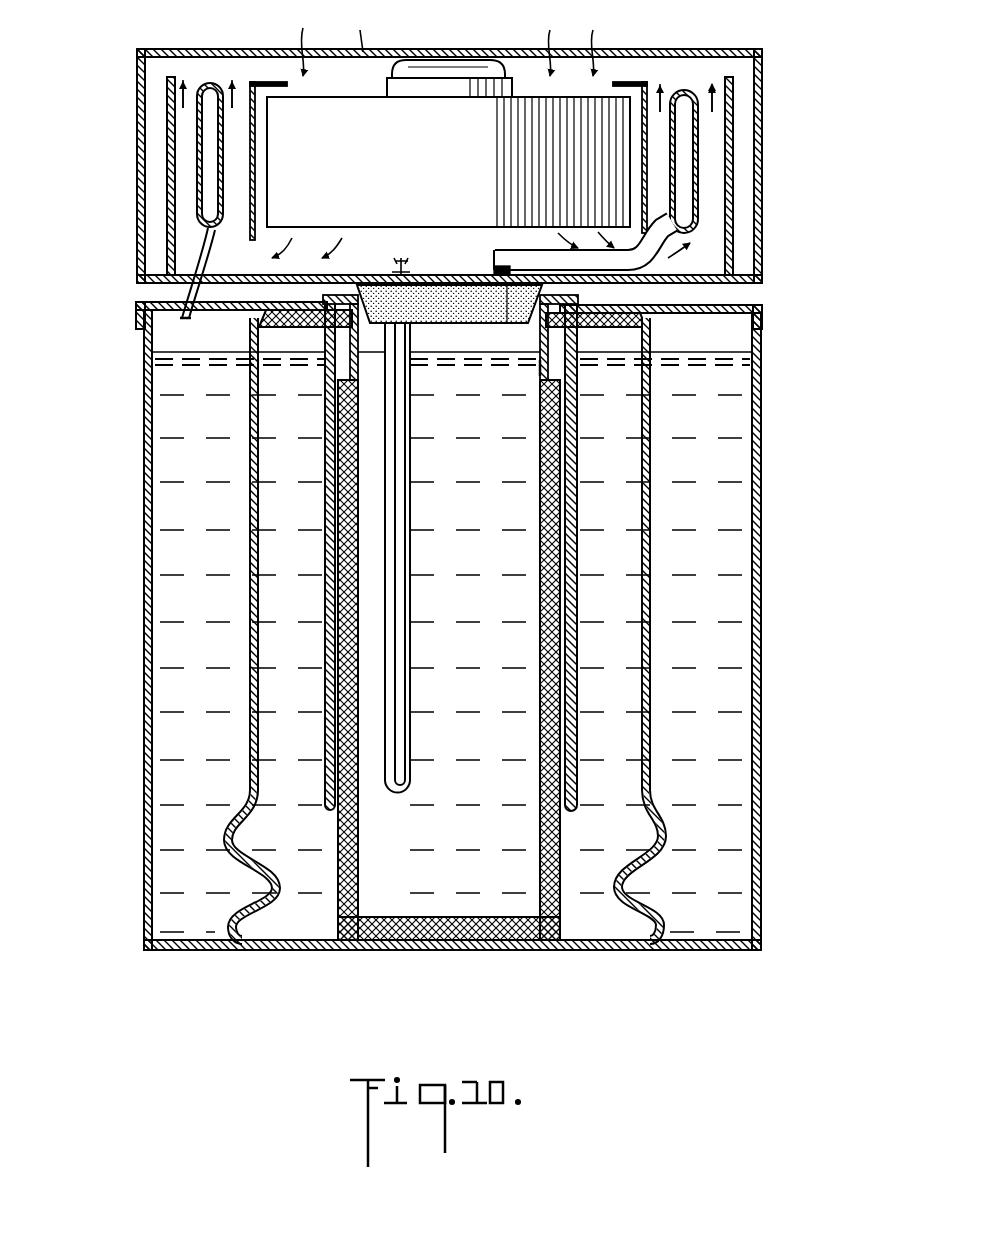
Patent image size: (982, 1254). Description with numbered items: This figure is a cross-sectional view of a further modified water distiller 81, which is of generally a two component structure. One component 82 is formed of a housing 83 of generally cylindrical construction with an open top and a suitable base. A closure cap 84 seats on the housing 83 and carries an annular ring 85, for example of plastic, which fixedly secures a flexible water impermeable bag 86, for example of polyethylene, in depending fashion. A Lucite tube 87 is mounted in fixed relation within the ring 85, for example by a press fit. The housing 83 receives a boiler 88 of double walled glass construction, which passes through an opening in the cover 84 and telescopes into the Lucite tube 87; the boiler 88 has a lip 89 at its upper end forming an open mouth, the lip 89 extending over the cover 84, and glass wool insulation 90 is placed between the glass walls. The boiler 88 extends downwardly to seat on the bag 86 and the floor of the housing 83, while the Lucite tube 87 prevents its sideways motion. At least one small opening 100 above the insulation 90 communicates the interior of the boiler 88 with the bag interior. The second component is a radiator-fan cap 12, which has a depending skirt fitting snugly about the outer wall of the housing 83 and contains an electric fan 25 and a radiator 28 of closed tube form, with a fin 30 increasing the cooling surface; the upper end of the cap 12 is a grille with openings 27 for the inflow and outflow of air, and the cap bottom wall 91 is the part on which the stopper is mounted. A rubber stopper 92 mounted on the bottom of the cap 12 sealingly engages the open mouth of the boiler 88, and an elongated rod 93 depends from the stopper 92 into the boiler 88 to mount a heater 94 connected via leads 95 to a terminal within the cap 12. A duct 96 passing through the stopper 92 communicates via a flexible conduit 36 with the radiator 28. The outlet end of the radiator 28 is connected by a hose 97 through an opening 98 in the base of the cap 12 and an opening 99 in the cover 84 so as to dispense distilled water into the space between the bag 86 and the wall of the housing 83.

The radiator-fan cap 12 is at (126, 146).
The electric fan 25 is at (334, 97).
The openings or perforations 27 is at (585, 50).
The radiator 28 is at (219, 196).
The fin 30 is at (168, 219).
The flexible conduit 36 is at (602, 252).
The water distiller 81 is at (126, 376).
The component 82 is at (140, 528).
The housing 83 is at (146, 631).
The closure cap 84 is at (234, 311).
The annular ring 85 is at (280, 328).
The flexible water impermeable bag 86 is at (252, 481).
The Lucite tube 87 is at (326, 570).
The boiler 88 is at (540, 409).
The lip 89 is at (344, 295).
The glass wool insulation 90 is at (560, 834).
The housing bottom wall 91 is at (145, 290).
The stopper 92 is at (445, 310).
The elongated rod 93 is at (399, 455).
The heater 94 is at (400, 752).
The leads 95 is at (403, 263).
The duct 96 is at (506, 320).
The conduit or hose 97 is at (210, 246).
The opening 98 is at (205, 262).
The opening 99 is at (196, 328).
The small opening 100 is at (540, 367).